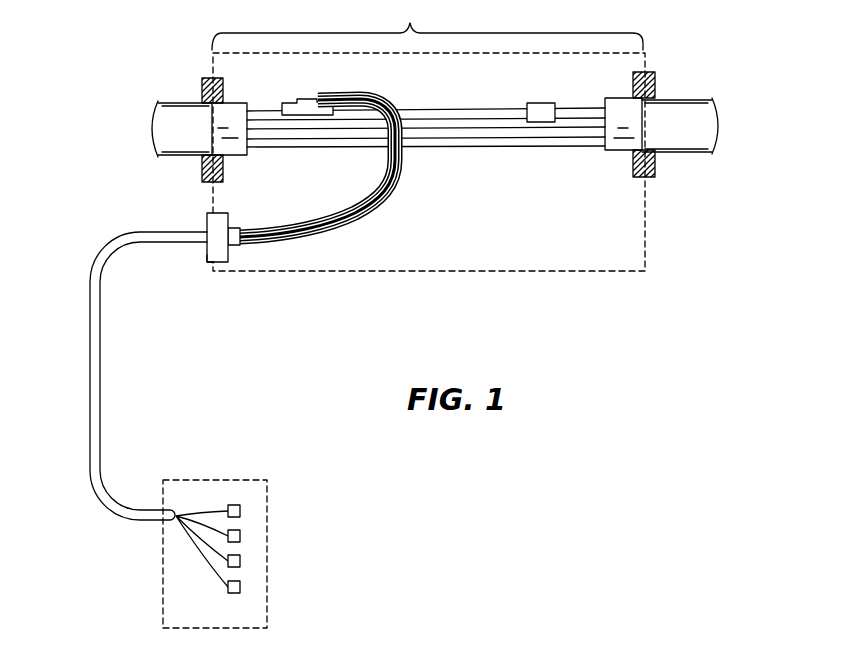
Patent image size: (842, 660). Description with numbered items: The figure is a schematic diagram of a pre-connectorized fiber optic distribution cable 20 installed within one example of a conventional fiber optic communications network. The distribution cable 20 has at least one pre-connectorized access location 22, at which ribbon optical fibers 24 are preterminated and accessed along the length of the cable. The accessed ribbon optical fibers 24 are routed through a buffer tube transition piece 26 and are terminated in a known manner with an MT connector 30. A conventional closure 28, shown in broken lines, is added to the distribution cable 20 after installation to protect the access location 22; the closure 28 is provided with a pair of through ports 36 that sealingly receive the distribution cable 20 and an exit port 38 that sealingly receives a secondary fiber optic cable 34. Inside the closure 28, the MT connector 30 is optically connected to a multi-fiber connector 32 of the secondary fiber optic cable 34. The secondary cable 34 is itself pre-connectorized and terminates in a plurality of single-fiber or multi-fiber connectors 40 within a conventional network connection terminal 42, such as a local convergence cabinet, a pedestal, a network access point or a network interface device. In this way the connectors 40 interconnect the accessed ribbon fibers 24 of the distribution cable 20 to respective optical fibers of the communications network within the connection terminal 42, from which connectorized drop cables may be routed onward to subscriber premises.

The fiber optic distribution cable 20 is at (692, 98).
The pre-connectorized access location 22 is at (427, 74).
The ribbon optical fibers 24 is at (325, 225).
The buffer tube transition piece 26 is at (292, 104).
The closure 28 is at (647, 230).
The MT connector 30 is at (233, 240).
The multi-fiber connector 32 is at (212, 225).
The secondary fiber optic cable 34 is at (92, 368).
The through ports 36 is at (657, 74).
The exit port 38 is at (205, 257).
The connectors 40 is at (237, 505).
The network connection terminal 42 is at (267, 525).